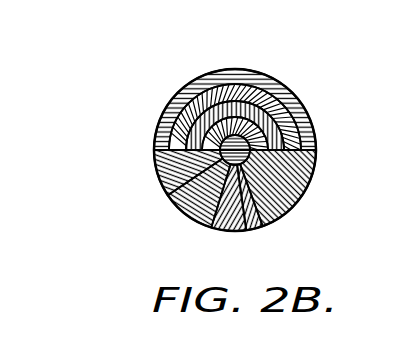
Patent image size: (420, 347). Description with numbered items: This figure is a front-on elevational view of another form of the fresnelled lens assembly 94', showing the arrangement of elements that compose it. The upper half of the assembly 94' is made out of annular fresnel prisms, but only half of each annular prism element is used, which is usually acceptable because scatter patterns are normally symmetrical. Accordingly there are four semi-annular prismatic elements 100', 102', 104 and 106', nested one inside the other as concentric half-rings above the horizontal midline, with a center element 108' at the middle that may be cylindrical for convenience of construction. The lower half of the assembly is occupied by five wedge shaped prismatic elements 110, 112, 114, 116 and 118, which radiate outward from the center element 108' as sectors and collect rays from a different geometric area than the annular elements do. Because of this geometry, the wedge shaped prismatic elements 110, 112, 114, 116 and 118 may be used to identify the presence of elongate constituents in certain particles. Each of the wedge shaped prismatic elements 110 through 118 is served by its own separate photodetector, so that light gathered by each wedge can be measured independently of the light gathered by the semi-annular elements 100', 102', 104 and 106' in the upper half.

The fresnelled lens assembly 94' is at (239, 131).
The semi-annular prismatic element 100' is at (269, 114).
The semi-annular prismatic element 102' is at (265, 109).
The semi-annular prismatic element 104 is at (196, 118).
The semi-annular prismatic element 106' is at (173, 132).
The center element 108' is at (172, 154).
The wedge shaped prismatic element 110 is at (316, 149).
The wedge shaped prismatic element 112 is at (288, 200).
The wedge shaped prismatic element 114 is at (236, 222).
The wedge shaped prismatic element 116 is at (187, 208).
The wedge shaped prismatic element 118 is at (170, 173).